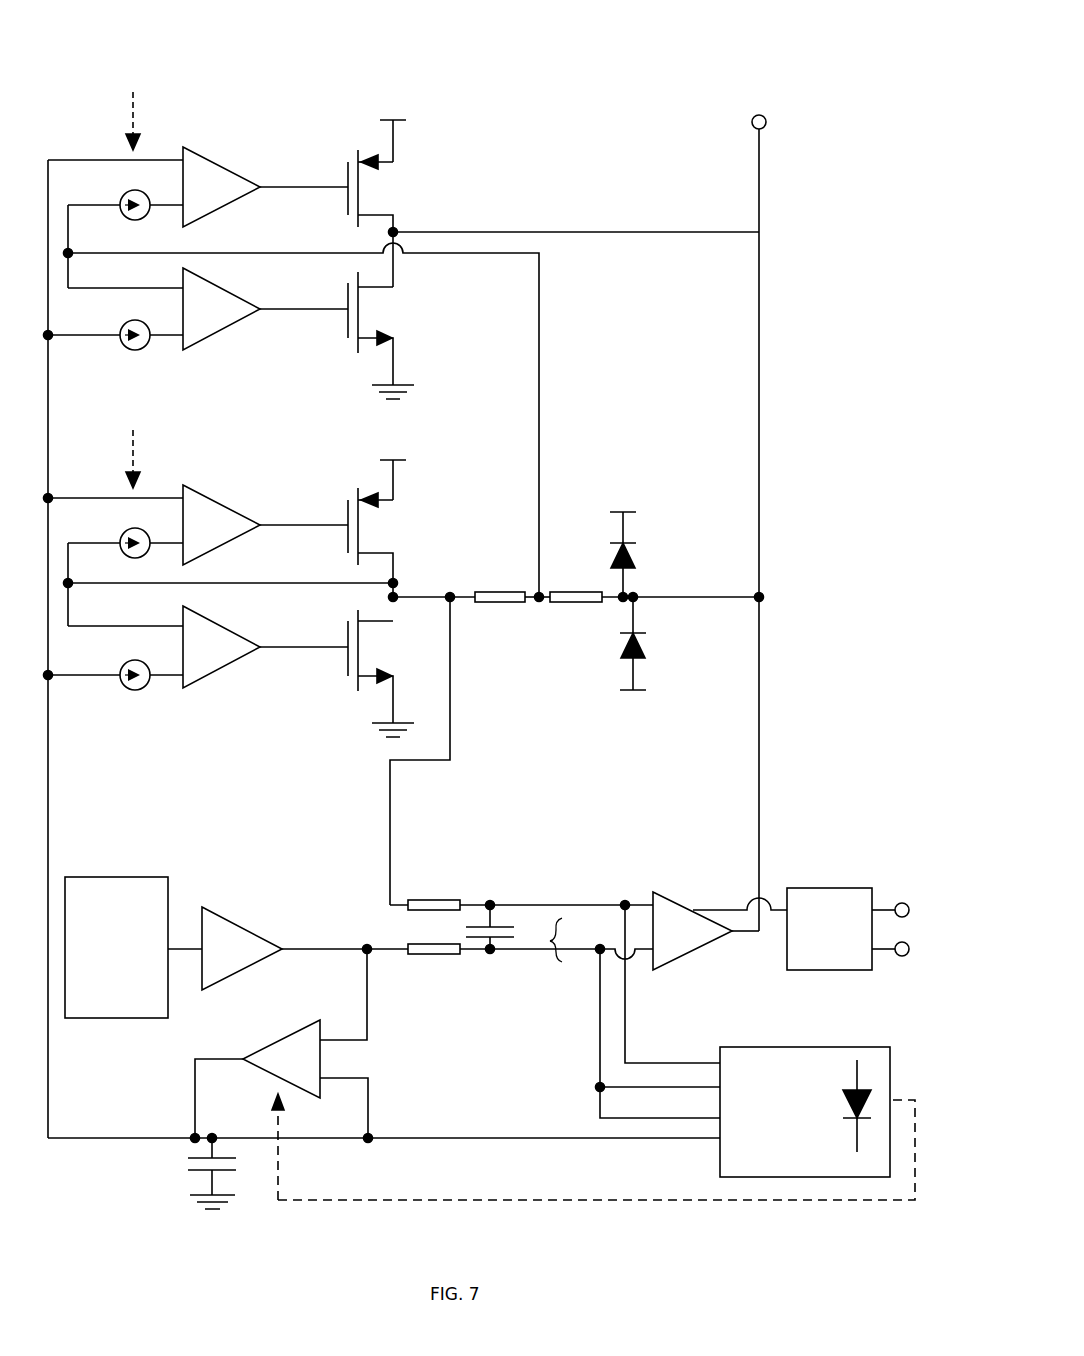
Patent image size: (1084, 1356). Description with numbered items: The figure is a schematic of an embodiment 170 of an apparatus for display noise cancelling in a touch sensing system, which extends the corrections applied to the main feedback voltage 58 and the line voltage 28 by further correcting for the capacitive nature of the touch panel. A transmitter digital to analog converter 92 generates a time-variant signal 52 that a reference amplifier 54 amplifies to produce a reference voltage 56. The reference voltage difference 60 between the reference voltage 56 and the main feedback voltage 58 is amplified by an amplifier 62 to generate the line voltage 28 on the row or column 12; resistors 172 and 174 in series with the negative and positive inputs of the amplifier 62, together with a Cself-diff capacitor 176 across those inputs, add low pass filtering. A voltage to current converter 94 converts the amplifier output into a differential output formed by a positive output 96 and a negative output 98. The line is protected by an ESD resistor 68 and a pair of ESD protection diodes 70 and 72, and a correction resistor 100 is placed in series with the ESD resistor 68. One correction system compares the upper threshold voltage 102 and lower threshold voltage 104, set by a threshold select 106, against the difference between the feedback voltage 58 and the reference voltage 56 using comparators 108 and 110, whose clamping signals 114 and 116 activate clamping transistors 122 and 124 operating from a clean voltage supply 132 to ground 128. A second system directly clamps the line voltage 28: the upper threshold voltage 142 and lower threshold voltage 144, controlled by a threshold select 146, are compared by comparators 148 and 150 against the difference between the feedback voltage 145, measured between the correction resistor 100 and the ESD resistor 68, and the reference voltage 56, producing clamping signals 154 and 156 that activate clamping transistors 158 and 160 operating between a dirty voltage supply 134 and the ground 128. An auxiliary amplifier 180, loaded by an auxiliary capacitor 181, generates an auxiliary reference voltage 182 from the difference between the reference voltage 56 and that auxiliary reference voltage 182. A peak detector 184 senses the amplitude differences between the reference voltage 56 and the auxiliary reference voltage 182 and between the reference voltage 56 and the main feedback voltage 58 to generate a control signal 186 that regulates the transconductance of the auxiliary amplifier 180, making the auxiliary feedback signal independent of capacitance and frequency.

The embodiment 170 is at (470, 40).
The threshold select 146 is at (129, 114).
The upper threshold voltage 142 is at (130, 219).
The lower threshold voltage 144 is at (130, 349).
The comparator 148 is at (221, 187).
The comparator 150 is at (221, 309).
The clamping signal 154 is at (300, 192).
The clamping signal 156 is at (300, 314).
The dirty voltage supply 134 is at (400, 146).
The clamping transistor 158 is at (404, 184).
The clamping transistor 160 is at (390, 310).
The ground 128 is at (388, 381).
The feedback voltage 145 is at (540, 386).
The threshold select 106 is at (129, 452).
The upper threshold voltage 102 is at (130, 557).
The lower threshold voltage 104 is at (130, 689).
The comparator 108 is at (221, 525).
The comparator 110 is at (221, 647).
The clamping signal 114 is at (300, 530).
The clamping signal 116 is at (300, 652).
The clean voltage supply 132 is at (400, 486).
The clamping transistor 122 is at (404, 523).
The clamping transistor 124 is at (390, 650).
The correction resistor 100 is at (496, 601).
The ESD resistor 68 is at (578, 601).
The ESD protection diode 70 is at (631, 548).
The ESD protection diode 72 is at (641, 636).
The row or column 12 is at (767, 119).
The line voltage 28 is at (760, 665).
The main feedback voltage 58 is at (389, 836).
The resistor 172 is at (455, 900).
The resistor 174 is at (452, 956).
The Cself-diff capacitor 176 is at (506, 925).
The reference voltage difference 60 is at (566, 926).
The amplifier 62 is at (713, 917).
The voltage to current converter 94 is at (829, 929).
The negative output 98 is at (908, 906).
The positive output 96 is at (908, 953).
The transmitter digital to analog converter 92 is at (116, 947).
The time-variant signal 52 is at (185, 949).
The reference amplifier 54 is at (241, 935).
The reference voltage 56 is at (366, 1010).
The auxiliary amplifier 180 is at (257, 1079).
The auxiliary reference voltage 182 is at (367, 1132).
The auxiliary capacitor 181 is at (196, 1170).
The peak detector 184 is at (805, 1112).
The control signal 186 is at (575, 1200).